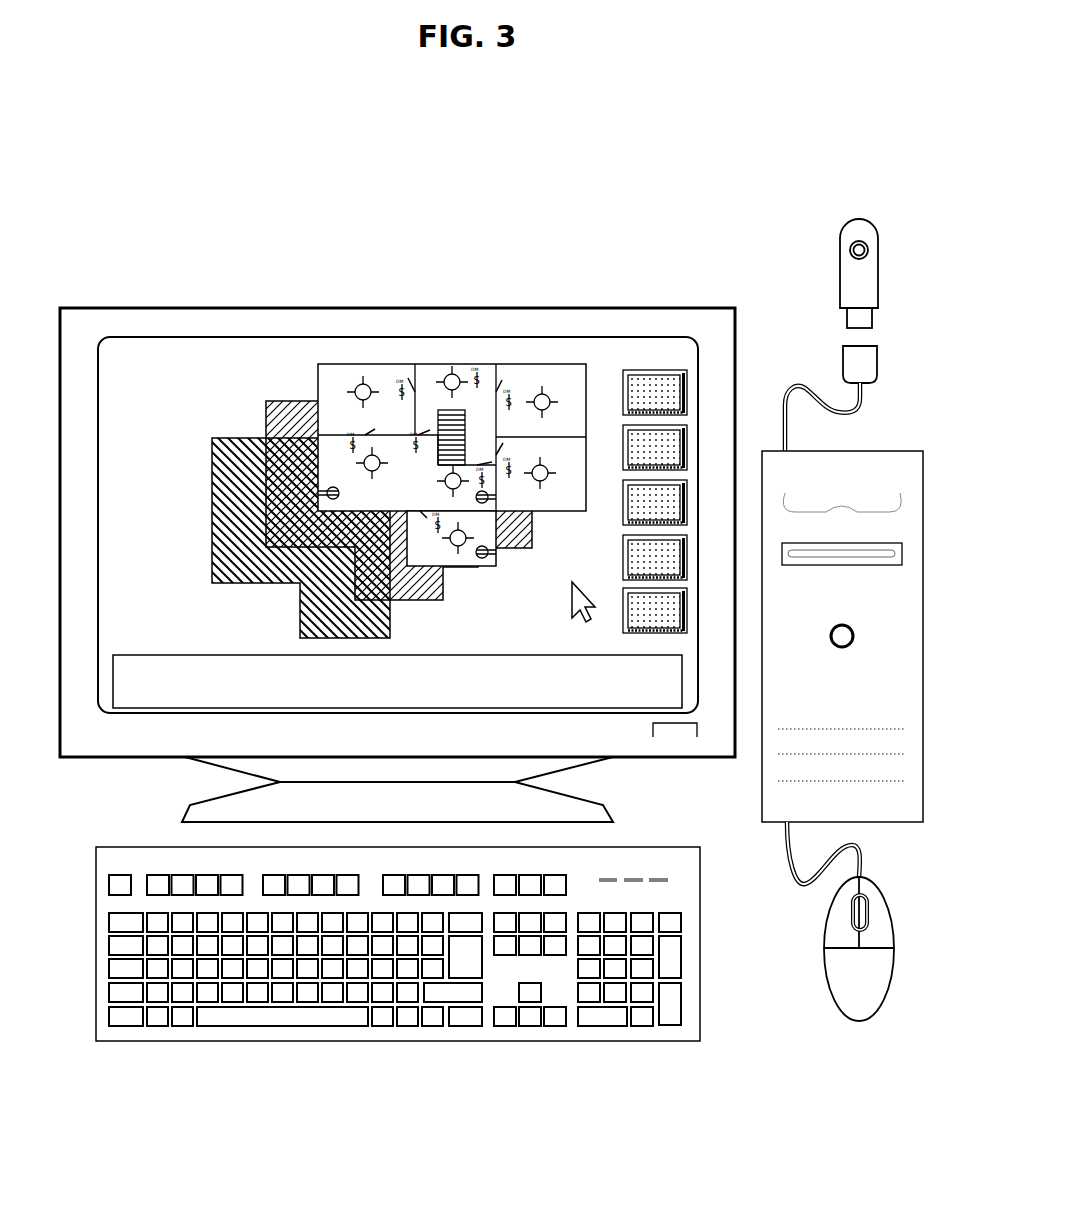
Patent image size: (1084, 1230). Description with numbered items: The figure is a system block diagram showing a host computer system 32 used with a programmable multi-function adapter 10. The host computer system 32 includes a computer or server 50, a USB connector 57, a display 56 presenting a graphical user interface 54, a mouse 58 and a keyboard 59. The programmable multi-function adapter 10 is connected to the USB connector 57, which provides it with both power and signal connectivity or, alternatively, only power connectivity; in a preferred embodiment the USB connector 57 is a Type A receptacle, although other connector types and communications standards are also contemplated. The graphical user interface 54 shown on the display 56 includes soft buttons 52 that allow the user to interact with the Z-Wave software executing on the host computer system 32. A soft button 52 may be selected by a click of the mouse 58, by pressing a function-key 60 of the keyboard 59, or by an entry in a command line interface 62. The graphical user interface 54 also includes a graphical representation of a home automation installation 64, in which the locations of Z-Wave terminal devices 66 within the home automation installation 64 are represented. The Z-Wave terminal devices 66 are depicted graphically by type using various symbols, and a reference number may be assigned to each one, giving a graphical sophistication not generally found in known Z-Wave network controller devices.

The programmable multi-function adapter 10 is at (851, 221).
The host computer system 32 is at (615, 209).
The computer or server 50 is at (878, 451).
The soft buttons 52 is at (688, 392).
The graphical user interface 54 is at (148, 362).
The display 56 is at (97, 308).
The USB connector 57 is at (843, 345).
The mouse 58 is at (823, 928).
The keyboard 59 is at (690, 888).
The function-key 60 is at (187, 874).
The command line interface 62 is at (198, 655).
The home automation installation 64 is at (433, 364).
The Z-Wave terminal devices 66 is at (355, 385).